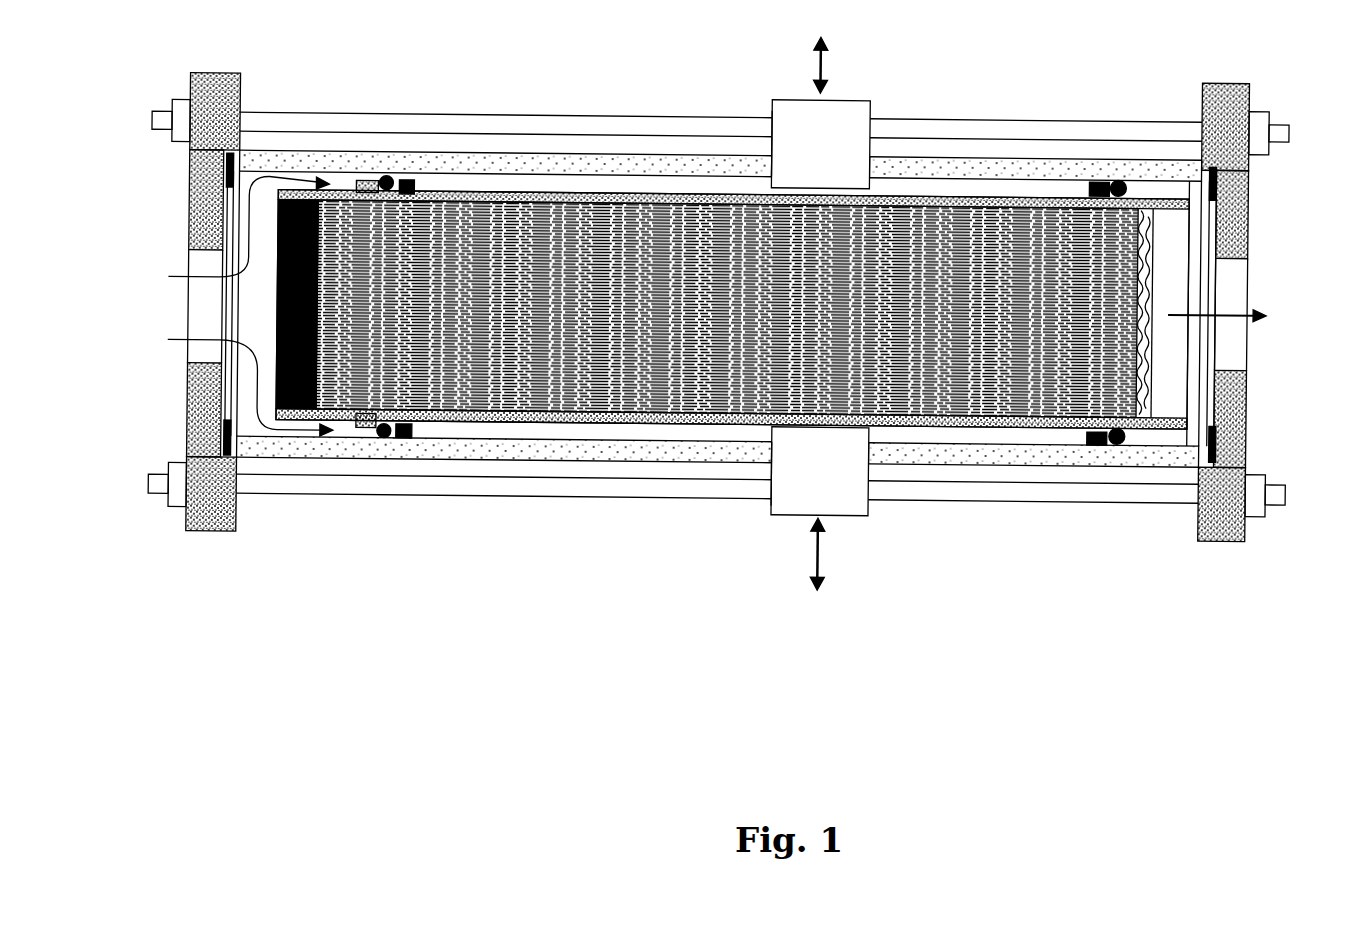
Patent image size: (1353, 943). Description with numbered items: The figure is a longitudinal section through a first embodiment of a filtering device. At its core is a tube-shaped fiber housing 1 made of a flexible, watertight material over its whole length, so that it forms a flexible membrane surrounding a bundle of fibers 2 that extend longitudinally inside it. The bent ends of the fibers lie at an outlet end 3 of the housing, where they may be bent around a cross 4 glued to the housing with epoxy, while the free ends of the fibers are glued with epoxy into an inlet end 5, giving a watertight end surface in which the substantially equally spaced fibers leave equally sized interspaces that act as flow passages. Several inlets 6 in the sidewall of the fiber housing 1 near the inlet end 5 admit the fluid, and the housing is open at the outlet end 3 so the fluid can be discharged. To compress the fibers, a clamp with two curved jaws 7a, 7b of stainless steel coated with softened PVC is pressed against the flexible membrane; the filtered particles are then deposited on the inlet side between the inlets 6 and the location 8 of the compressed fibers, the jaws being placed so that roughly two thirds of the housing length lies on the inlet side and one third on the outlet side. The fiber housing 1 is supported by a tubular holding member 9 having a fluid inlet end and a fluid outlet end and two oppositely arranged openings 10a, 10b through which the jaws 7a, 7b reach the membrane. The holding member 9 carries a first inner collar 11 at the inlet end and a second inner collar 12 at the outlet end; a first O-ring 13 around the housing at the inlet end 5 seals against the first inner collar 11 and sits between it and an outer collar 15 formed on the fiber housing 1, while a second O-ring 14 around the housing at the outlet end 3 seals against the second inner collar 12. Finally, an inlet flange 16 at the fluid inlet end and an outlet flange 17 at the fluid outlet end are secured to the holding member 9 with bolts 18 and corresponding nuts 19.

The fiber housing 1 is at (985, 422).
The bundle of fibers 2 is at (487, 368).
The outlet end 3 is at (1150, 397).
The cross 4 is at (1150, 228).
The inlet end 5 is at (277, 228).
The inlets 6 is at (333, 417).
The curved jaw 7a is at (853, 98).
The curved jaw 7b is at (848, 518).
The location of the compressed fibers 8 is at (793, 405).
The holding member 9 is at (470, 167).
The opening 10a is at (768, 158).
The opening 10b is at (770, 455).
The first inner collar 11 is at (405, 180).
The second inner collar 12 is at (1098, 178).
The first O-ring 13 is at (389, 443).
The second O-ring 14 is at (1126, 441).
The outer collar 15 is at (357, 186).
The inlet flange 16 is at (220, 536).
The outlet flange 17 is at (1243, 537).
The bolts 18 is at (1145, 118).
The nuts 19 is at (1256, 104).